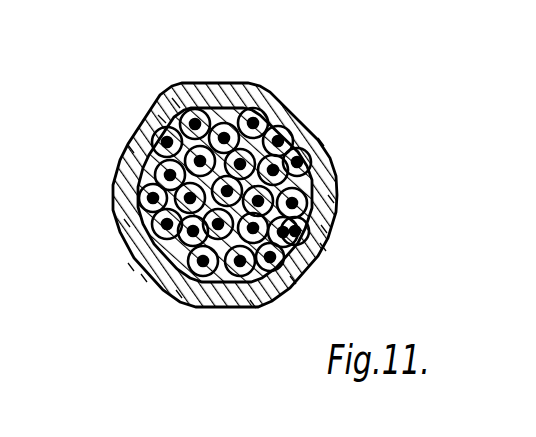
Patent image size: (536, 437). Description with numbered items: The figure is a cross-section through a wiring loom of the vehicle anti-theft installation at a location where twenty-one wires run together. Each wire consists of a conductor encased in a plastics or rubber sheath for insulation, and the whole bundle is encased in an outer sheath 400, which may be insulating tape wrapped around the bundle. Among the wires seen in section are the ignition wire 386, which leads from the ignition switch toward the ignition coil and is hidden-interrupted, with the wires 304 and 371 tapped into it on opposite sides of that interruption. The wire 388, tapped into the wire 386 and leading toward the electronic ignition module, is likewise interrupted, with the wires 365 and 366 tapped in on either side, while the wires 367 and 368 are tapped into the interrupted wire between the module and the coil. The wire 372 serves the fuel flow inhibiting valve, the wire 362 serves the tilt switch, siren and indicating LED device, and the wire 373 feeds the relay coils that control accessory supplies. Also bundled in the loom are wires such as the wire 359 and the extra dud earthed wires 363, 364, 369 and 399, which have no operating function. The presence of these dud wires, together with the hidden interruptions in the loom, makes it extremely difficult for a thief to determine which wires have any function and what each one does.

The wire 304 is at (287, 93).
The wire 359 is at (160, 117).
The wire 362 is at (323, 227).
The dud earthed wire 363 is at (126, 221).
The dud earthed wire 364 is at (130, 265).
The wire 365 is at (143, 276).
The wire 366 is at (292, 278).
The wire 367 is at (178, 292).
The wire 368 is at (253, 305).
The dud earthed wire 369 is at (322, 245).
The wire 371 is at (330, 197).
The wire 372 is at (320, 140).
The wire 373 is at (174, 100).
The wire 386 is at (222, 84).
The wire 388 is at (130, 147).
The dud wire 399 is at (233, 105).
The outer sheath 400 is at (267, 90).